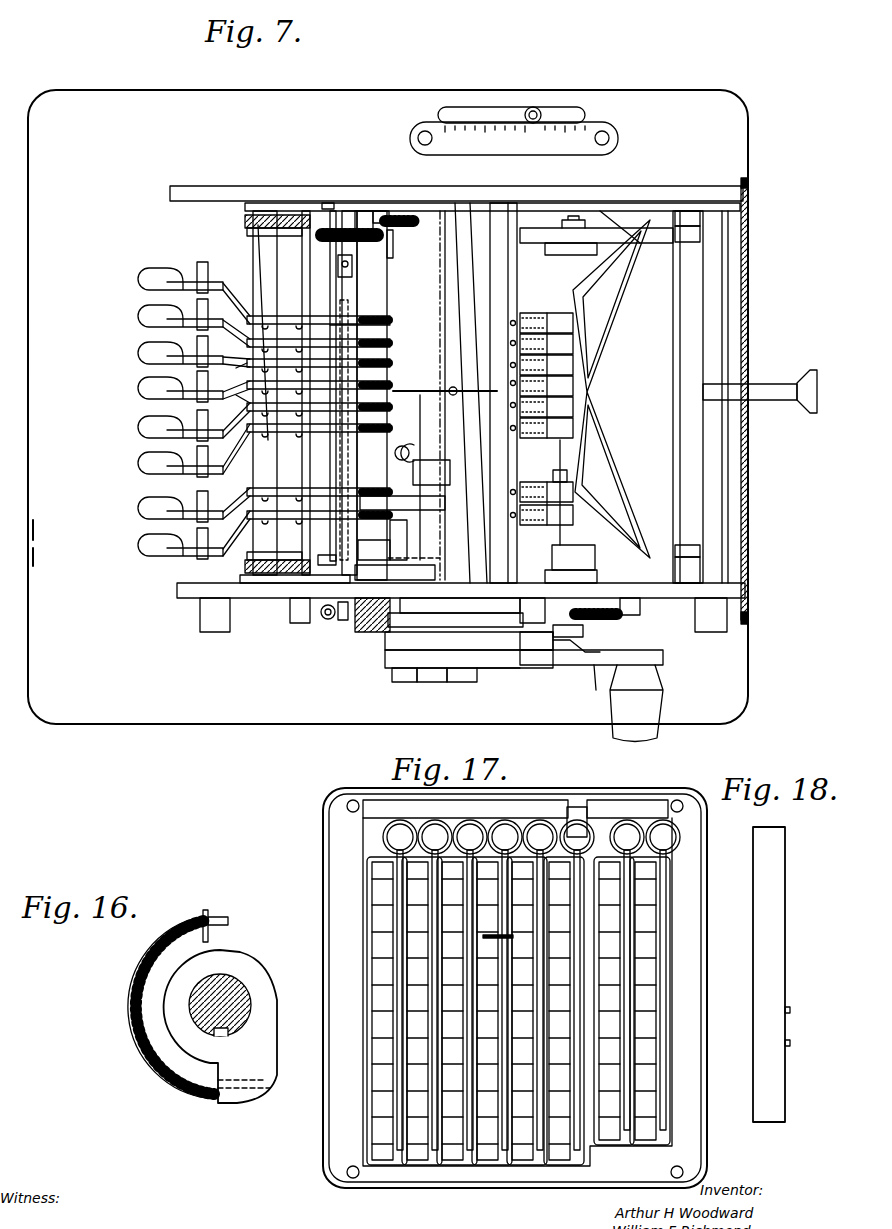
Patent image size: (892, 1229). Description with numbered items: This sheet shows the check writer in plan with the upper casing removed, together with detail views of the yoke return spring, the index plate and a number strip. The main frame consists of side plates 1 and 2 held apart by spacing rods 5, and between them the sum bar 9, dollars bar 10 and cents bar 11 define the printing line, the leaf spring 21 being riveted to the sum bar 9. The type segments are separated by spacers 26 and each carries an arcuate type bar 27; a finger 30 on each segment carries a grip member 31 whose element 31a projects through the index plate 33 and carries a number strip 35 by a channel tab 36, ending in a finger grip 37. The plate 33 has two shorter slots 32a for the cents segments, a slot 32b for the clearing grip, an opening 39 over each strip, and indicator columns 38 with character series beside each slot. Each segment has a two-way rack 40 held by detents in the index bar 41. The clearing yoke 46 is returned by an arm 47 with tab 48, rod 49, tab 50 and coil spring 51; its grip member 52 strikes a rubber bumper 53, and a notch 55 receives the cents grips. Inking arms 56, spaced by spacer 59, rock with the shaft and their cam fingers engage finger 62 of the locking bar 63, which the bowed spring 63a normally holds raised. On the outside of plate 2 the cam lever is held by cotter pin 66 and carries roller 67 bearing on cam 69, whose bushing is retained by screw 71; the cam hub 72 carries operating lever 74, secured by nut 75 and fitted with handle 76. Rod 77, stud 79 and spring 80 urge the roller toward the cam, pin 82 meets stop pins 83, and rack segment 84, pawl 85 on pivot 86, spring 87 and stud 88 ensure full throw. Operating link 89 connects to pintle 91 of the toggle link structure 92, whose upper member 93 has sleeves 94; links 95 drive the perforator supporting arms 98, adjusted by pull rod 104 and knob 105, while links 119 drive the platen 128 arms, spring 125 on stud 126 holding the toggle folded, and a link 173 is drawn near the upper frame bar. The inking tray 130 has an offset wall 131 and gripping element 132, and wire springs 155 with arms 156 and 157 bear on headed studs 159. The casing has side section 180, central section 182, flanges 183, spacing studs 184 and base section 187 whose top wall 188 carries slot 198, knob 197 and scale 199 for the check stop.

In FIG. 7, the side plate 1 is at (622, 193).
In FIG. 7, the side plate 2 is at (177, 590).
In FIG. 7, the spacing rods 5 is at (722, 455).
In FIG. 7, the sum bar 9 is at (372, 292).
In FIG. 7, the dollars bar 10 is at (378, 438).
In FIG. 7, the cents bar 11 is at (388, 541).
In FIG. 7, the leaf spring 21 is at (338, 268).
In FIG. 7, the spacers 26 is at (380, 340).
In FIG. 7, the arcuate type bar 27 is at (560, 320).
In FIG. 7, the finger 30 is at (300, 480).
In FIG. 7, the grip member 31 is at (275, 490).
In FIG. 7, the element of grip member 31a is at (258, 437).
In FIG. 17, the slots 32a is at (665, 1140).
In FIG. 17, the slot 32b is at (578, 1165).
In FIG. 17, the index plate 33 is at (706, 830).
In FIG. 7, the number strip 35 is at (200, 272).
In FIG. 18, the number strip 35 is at (786, 866).
In FIG. 7, the tab 36 is at (232, 466).
In FIG. 7, the finger grip 37 is at (140, 460).
In FIG. 17, the indicator columns 38 is at (438, 1163).
In FIG. 17, the opening 39 is at (400, 945).
In FIG. 7, the two-way rack 40 is at (380, 376).
In FIG. 7, the index bar 41 is at (498, 205).
In FIG. 7, the clearing yoke 46 is at (388, 278).
In FIG. 16, the arm 47 is at (240, 962).
In FIG. 16, the tab 48 is at (216, 1103).
In FIG. 7, the rod 49 is at (328, 203).
In FIG. 16, the rod 49 is at (224, 917).
In FIG. 7, the tab 50 is at (392, 250).
In FIG. 16, the tab 50 is at (205, 910).
In FIG. 7, the expansion coil spring 51 is at (332, 228).
In FIG. 16, the expansion coil spring 51 is at (130, 1028).
In FIG. 7, the grip member 52 is at (395, 470).
In FIG. 7, the rubber bumper 53 is at (430, 508).
In FIG. 7, the notch 55 is at (392, 530).
In FIG. 7, the inking arms 56 is at (303, 218).
In FIG. 7, the spacer 59 is at (375, 565).
In FIG. 7, the finger 62 is at (380, 210).
In FIG. 7, the locking and aligning bar 63 is at (450, 203).
In FIG. 7, the bowed wire spring 63a is at (443, 386).
In FIG. 7, the cotter pin 66 is at (420, 627).
In FIG. 7, the roller 67 is at (360, 632).
In FIG. 7, the cam 69 is at (460, 682).
In FIG. 7, the screw 71 is at (430, 682).
In FIG. 7, the hub 72 is at (398, 650).
In FIG. 7, the operating lever 74 is at (584, 665).
In FIG. 7, the nut 75 is at (400, 682).
In FIG. 7, the handle 76 is at (645, 712).
In FIG. 7, the rod 77 is at (325, 620).
In FIG. 7, the stud 79 is at (300, 610).
In FIG. 7, the expansion coil spring 80 is at (343, 621).
In FIG. 7, the pin 82 is at (530, 650).
In FIG. 7, the stop pins 83 is at (478, 613).
In FIG. 7, the rack segment 84 is at (492, 668).
In FIG. 7, the full throw pawl 85 is at (560, 652).
In FIG. 7, the pivot 86 is at (566, 640).
In FIG. 7, the tension spring 87 is at (598, 622).
In FIG. 7, the stud 88 is at (630, 615).
In FIG. 7, the operating link 89 is at (596, 665).
In FIG. 7, the pintle 91 is at (560, 452).
In FIG. 7, the toggle link structure 92 is at (670, 305).
In FIG. 7, the upper member 93 is at (645, 270).
In FIG. 7, the sleeves 94 is at (552, 270).
In FIG. 7, the links 95 is at (588, 245).
In FIG. 7, the perforator supporting arms 98 is at (535, 228).
In FIG. 7, the pull rod 104 is at (760, 384).
In FIG. 7, the knob 105 is at (810, 413).
In FIG. 7, the links 119 is at (700, 233).
In FIG. 7, the tension spring 125 is at (400, 215).
In FIG. 7, the stud 126 is at (362, 210).
In FIG. 7, the platen 128 is at (573, 216).
In FIG. 7, the tray 130 is at (253, 245).
In FIG. 7, the inwardly offset wall 131 is at (258, 290).
In FIG. 7, the gripping element 132 is at (250, 375).
In FIG. 7, the wire spring 155 is at (245, 568).
In FIG. 7, the arms 156 is at (245, 222).
In FIG. 7, the arms 157 is at (265, 228).
In FIG. 7, the headed studs 159 is at (332, 215).
In FIG. 7, the link 173 is at (623, 218).
In FIG. 7, the side section 180 is at (683, 210).
In FIG. 7, the central section 182 is at (748, 285).
In FIG. 7, the flange 183 is at (748, 184).
In FIG. 7, the spacing studs 184 is at (200, 618).
In FIG. 7, the base section 187 is at (33, 560).
In FIG. 7, the top wall 188 is at (33, 535).
In FIG. 7, the knob 197 is at (537, 108).
In FIG. 7, the slot 198 is at (455, 110).
In FIG. 7, the scale 199 is at (497, 112).